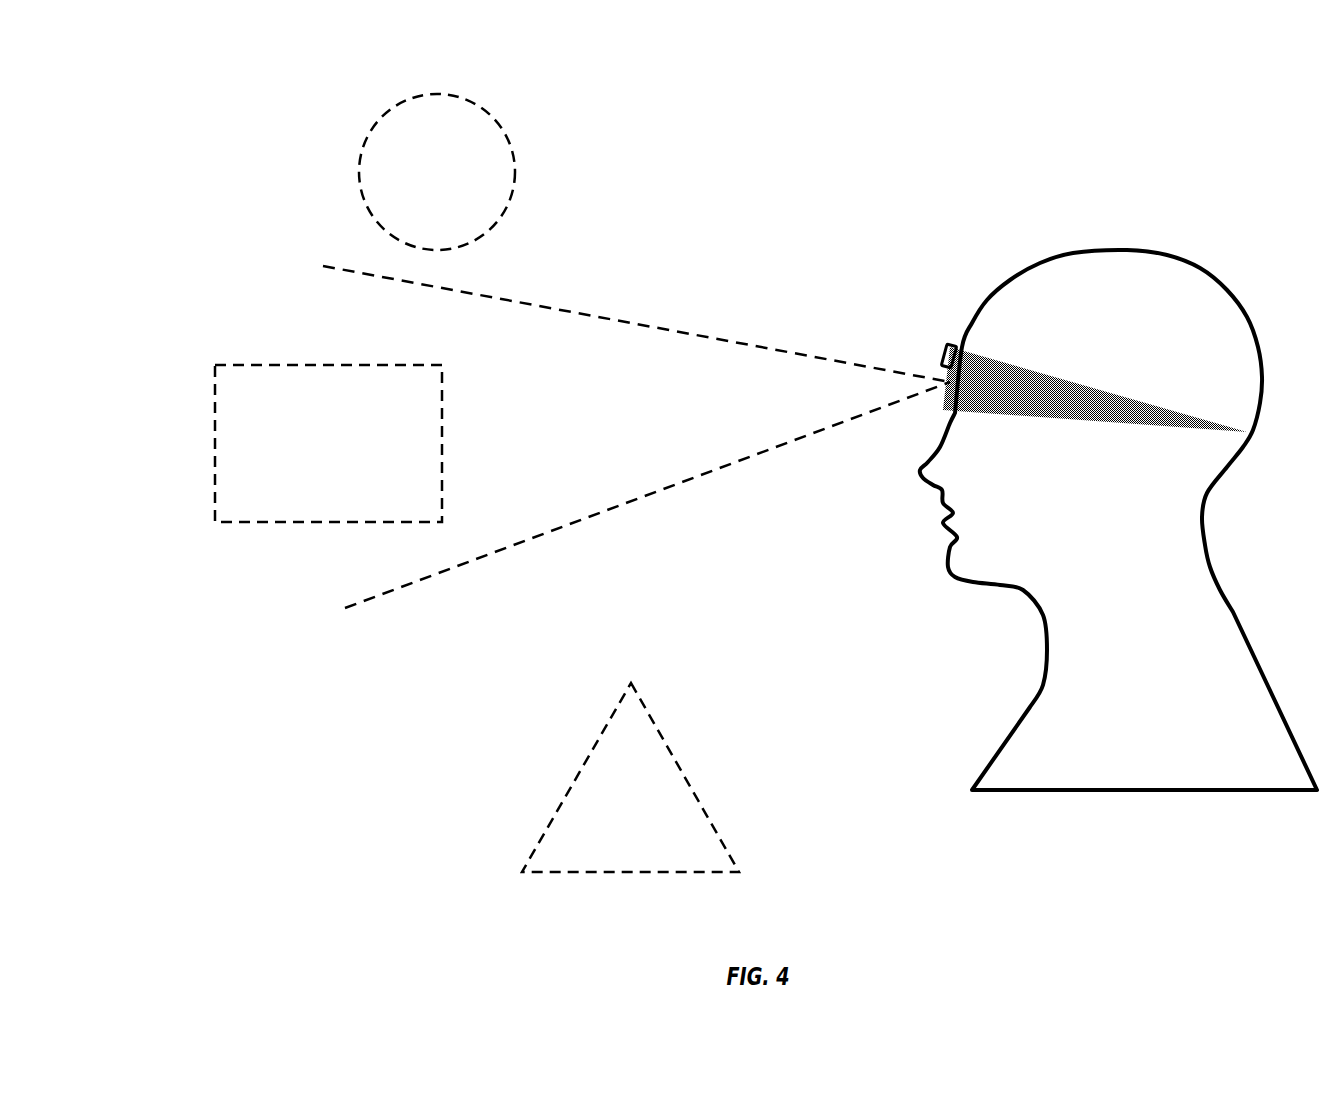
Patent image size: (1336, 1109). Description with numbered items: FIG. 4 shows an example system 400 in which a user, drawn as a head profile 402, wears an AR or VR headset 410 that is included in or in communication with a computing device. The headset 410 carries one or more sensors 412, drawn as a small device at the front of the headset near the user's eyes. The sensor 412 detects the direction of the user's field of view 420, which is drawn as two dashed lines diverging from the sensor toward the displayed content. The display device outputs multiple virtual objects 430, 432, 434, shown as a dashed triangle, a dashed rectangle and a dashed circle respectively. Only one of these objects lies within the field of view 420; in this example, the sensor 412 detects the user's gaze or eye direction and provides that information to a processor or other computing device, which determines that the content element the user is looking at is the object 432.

The system 400 is at (178, 109).
The user head 402 is at (905, 666).
The AR or VR headset 410 is at (984, 400).
The sensor 412 is at (901, 343).
The user's field of view 420 is at (656, 508).
The virtual object 430 is at (613, 834).
The virtual object 432 is at (309, 468).
The virtual object 434 is at (418, 198).